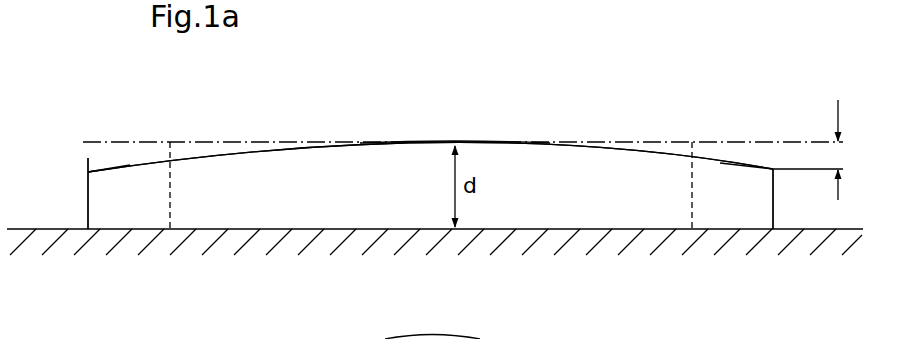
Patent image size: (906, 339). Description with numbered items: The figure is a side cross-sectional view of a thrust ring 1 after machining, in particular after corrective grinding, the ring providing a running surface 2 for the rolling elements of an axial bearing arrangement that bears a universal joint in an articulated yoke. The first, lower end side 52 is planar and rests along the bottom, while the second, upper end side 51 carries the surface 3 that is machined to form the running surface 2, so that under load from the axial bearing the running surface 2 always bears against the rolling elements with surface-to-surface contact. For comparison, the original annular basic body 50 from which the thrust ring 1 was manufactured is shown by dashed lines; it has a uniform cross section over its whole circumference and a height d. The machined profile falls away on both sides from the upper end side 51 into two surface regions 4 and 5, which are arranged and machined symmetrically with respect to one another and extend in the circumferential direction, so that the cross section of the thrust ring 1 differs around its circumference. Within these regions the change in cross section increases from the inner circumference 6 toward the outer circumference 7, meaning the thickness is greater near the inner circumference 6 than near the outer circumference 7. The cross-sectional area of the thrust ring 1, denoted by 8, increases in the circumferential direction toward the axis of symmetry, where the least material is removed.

The thrust ring 1 is at (532, 85).
The running surface 2 is at (737, 161).
The surface 3 is at (633, 150).
The surface region 4 is at (105, 168).
The surface region 5 is at (760, 166).
The inner circumference 6 is at (172, 190).
The outer circumference 7 is at (88, 196).
The cross-sectional area 8 is at (743, 207).
The annular basic body 50 is at (135, 142).
The second upper end side 51 is at (366, 143).
The first lower end side 52 is at (370, 229).